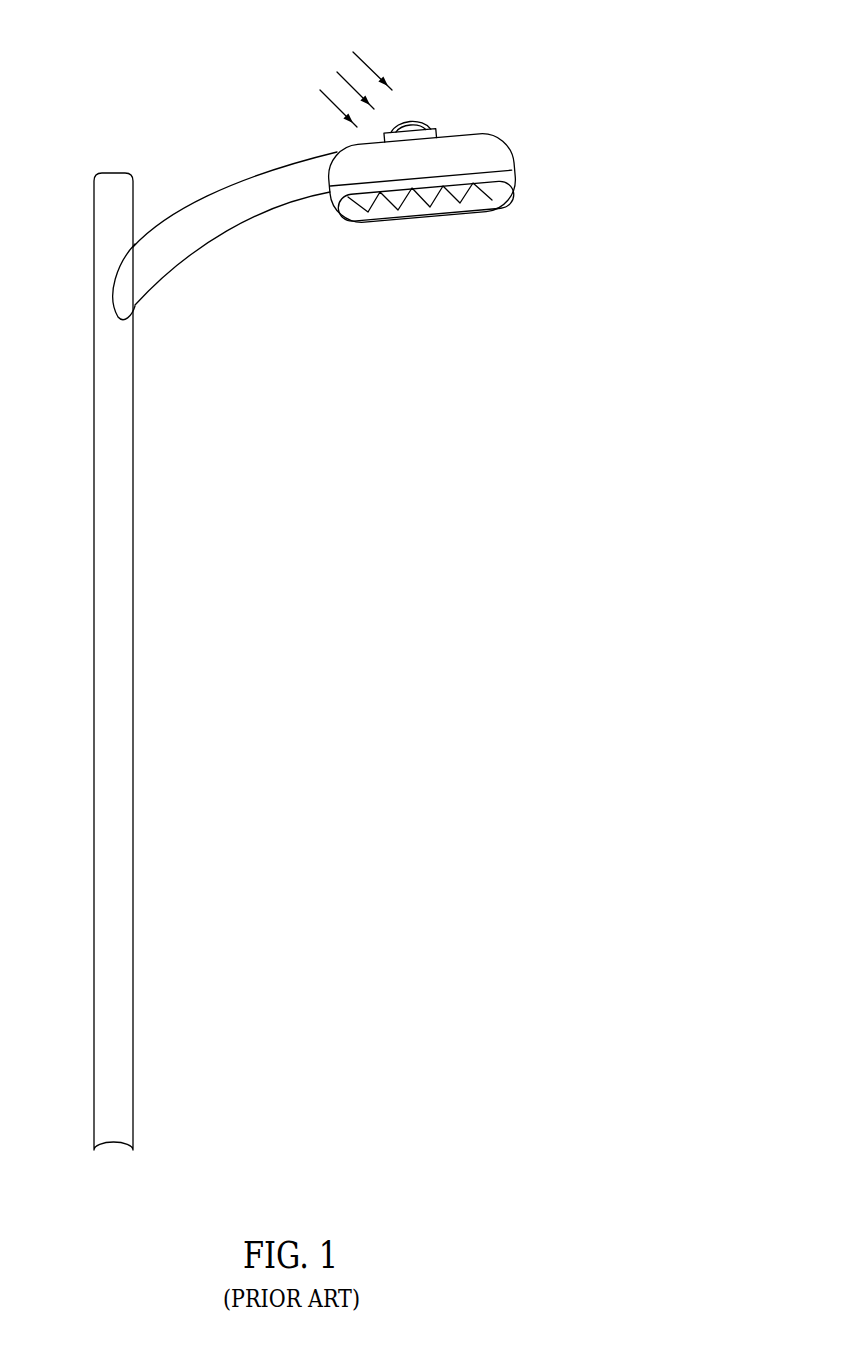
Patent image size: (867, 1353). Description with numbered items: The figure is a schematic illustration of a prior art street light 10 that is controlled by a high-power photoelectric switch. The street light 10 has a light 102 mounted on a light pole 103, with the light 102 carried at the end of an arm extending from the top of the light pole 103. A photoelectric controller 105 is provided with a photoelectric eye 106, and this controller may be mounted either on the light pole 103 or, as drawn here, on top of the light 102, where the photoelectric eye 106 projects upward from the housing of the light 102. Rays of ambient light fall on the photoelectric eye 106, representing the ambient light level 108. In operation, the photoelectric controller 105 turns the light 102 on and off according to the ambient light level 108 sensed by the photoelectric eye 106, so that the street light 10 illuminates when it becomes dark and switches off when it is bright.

The street light 10 is at (558, 80).
The light 102 is at (483, 212).
The light pole 103 is at (133, 425).
The photoelectric controller 105 is at (446, 137).
The photoelectric eye 106 is at (406, 121).
The ambient light level 108 is at (370, 66).